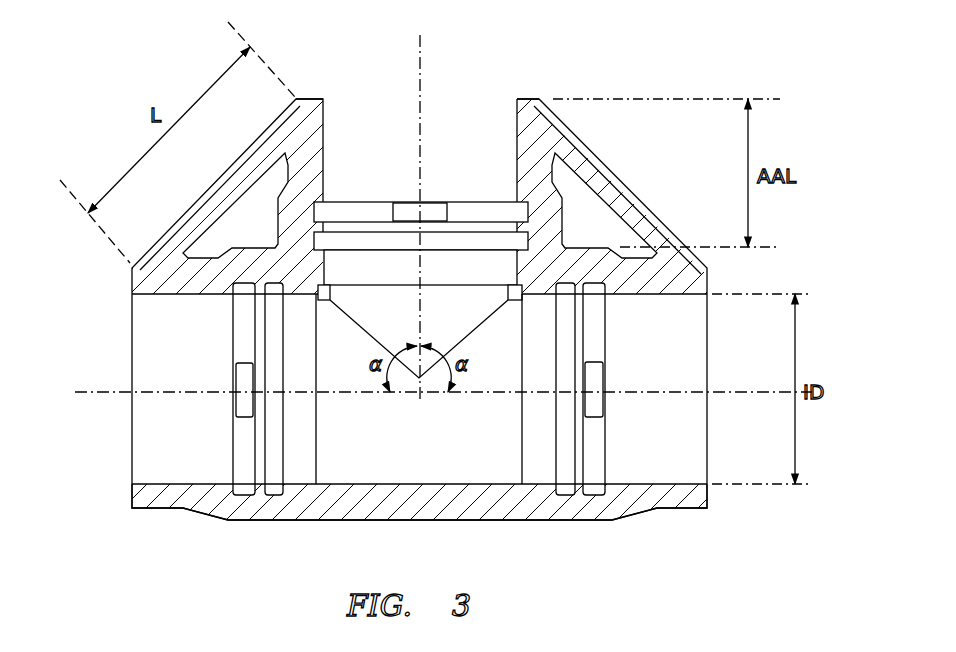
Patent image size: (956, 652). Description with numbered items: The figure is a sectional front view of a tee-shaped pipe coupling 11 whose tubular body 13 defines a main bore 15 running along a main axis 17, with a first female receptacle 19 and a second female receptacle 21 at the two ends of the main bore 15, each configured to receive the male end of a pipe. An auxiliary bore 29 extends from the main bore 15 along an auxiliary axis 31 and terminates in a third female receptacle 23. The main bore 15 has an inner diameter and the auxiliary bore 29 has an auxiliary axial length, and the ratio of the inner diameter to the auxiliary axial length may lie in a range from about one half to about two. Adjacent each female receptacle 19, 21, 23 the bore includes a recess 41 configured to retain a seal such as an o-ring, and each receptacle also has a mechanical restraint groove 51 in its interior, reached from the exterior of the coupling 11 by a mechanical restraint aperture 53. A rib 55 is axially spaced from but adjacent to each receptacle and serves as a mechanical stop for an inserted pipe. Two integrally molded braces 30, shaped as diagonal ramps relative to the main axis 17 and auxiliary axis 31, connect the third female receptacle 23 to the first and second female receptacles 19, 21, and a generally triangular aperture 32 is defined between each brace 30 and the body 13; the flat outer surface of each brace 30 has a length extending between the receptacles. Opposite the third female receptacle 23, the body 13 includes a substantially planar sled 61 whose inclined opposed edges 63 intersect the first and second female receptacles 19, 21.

The pipe coupling 11 is at (714, 91).
The body 13 is at (405, 520).
The main bore 15 is at (148, 295).
The main axis 17 is at (93, 391).
The first female receptacle 19 is at (150, 509).
The second female receptacle 21 is at (687, 509).
The third female receptacle 23 is at (525, 100).
The auxiliary bore 29 is at (331, 100).
The brace 30 is at (232, 165).
The auxiliary axis 31 is at (418, 58).
The aperture 32 is at (227, 223).
The recess 41 is at (316, 240).
The mechanical restraint groove 51 is at (522, 205).
The mechanical restraint aperture 53 is at (440, 212).
The rib 55 is at (513, 280).
The sled 61 is at (475, 520).
The opposed edges 63 is at (230, 494).